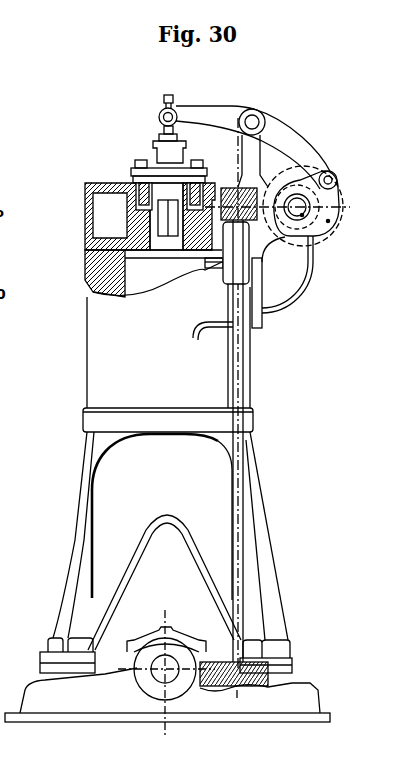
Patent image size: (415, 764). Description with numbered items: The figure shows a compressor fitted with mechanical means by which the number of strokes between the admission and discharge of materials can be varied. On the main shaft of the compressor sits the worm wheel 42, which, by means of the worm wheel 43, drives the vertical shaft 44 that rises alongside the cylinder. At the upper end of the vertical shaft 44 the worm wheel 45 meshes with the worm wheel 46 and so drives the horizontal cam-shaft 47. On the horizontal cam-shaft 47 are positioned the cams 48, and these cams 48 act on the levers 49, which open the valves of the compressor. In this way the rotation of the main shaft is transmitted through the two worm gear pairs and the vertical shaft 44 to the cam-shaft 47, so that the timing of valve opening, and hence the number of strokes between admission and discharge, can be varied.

The worm wheel 42 is at (137, 683).
The worm wheel 43 is at (268, 672).
The vertical shaft 44 is at (240, 471).
The worm wheel 45 is at (222, 188).
The worm wheel 46 is at (341, 193).
The horizontal cam-shaft 47 is at (304, 217).
The cams 48 is at (335, 231).
The levers 49 is at (289, 141).